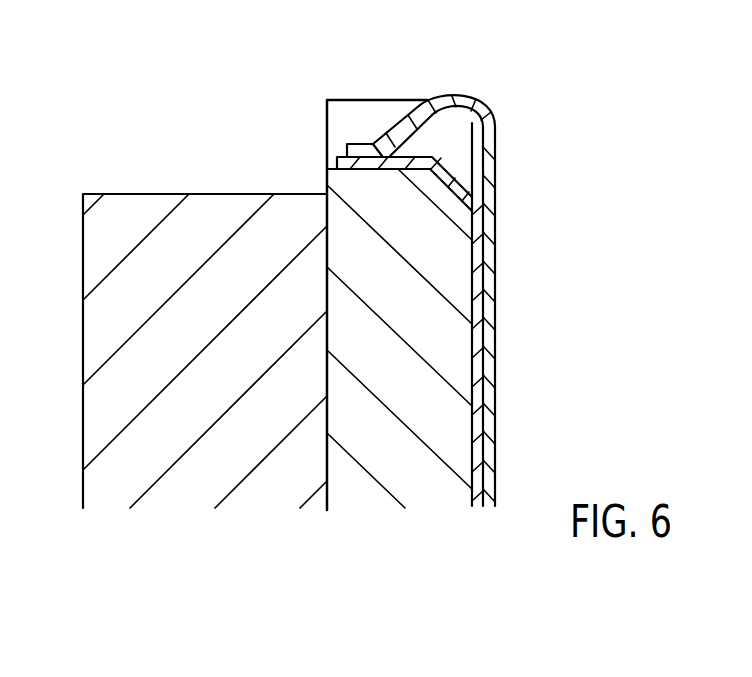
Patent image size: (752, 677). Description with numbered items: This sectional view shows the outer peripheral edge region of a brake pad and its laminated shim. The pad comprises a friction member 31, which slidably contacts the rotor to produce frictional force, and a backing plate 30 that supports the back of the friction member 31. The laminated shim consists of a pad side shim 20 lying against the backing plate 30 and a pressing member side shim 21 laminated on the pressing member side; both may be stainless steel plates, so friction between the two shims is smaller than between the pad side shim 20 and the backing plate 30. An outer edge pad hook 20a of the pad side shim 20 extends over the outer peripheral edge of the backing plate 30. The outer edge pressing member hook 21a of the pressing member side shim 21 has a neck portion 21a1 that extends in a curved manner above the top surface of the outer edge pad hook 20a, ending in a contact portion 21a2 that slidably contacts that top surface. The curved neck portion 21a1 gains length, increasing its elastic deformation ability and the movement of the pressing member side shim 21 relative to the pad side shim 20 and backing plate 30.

The pad side shim 20 is at (458, 314).
The outer edge pad hook 20a is at (451, 177).
The pressing member side shim 21 is at (456, 261).
The outer edge pressing member hook 21a is at (456, 86).
The neck portion 21a1 is at (488, 124).
The contact portion 21a2 is at (358, 147).
The backing plate 30 is at (385, 477).
The friction member 31 is at (96, 483).